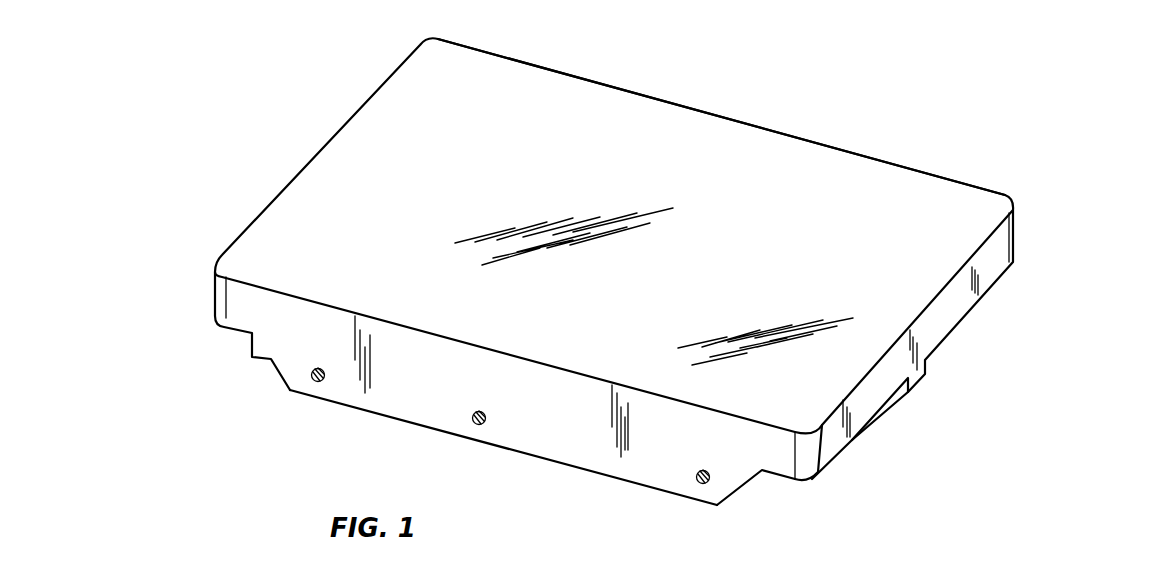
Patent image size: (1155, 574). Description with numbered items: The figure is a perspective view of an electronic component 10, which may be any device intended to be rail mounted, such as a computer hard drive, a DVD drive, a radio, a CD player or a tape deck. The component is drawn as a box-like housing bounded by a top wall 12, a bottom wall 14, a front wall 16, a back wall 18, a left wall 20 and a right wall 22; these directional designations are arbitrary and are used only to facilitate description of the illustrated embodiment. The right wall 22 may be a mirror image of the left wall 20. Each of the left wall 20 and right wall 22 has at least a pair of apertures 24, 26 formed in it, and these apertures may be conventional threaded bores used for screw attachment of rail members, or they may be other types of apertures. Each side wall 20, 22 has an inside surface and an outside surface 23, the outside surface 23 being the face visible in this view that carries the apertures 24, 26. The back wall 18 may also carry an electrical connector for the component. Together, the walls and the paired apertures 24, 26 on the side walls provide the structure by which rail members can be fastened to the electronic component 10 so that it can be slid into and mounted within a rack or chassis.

The electronic component 10 is at (1069, 150).
The top wall 12 is at (888, 186).
The bottom wall 14 is at (716, 507).
The front wall 16 is at (948, 311).
The back wall 18 is at (213, 283).
The left wall 20 is at (543, 432).
The right wall 22 is at (840, 146).
The outside surface 23 is at (443, 392).
The aperture 24 is at (697, 478).
The aperture 26 is at (310, 377).